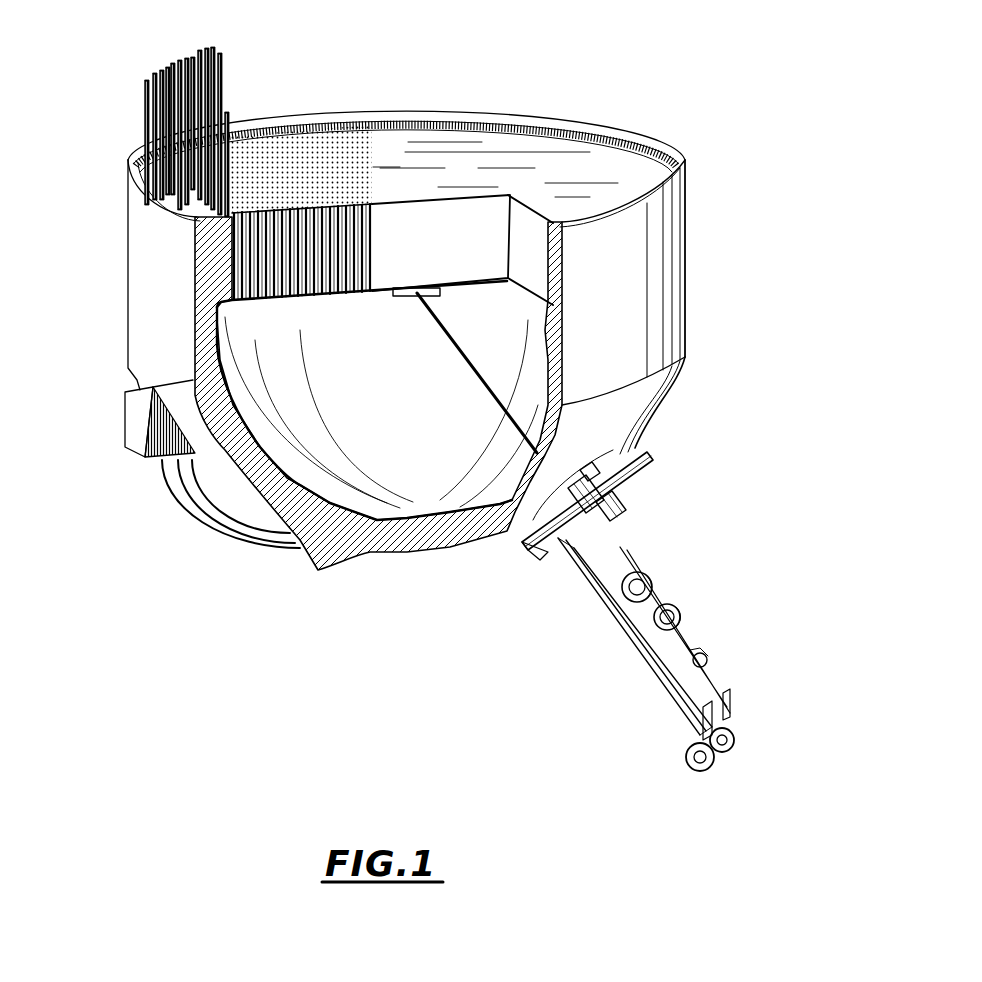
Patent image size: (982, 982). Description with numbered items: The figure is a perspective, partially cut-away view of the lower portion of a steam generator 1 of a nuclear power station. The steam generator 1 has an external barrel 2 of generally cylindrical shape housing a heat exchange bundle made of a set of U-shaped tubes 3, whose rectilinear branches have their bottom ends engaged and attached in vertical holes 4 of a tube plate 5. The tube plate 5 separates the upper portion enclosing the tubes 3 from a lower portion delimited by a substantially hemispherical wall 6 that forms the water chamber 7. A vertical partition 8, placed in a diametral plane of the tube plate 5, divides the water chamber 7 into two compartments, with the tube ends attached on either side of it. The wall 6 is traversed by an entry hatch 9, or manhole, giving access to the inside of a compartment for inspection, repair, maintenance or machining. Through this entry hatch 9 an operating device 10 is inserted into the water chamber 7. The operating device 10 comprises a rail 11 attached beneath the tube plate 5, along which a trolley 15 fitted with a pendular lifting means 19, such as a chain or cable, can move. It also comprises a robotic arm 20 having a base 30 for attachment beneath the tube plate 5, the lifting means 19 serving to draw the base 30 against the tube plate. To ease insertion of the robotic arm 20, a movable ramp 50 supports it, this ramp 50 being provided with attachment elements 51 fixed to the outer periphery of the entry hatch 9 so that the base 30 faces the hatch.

The steam generator 1 is at (494, 407).
The external barrel 2 is at (137, 262).
The tubes 3 is at (148, 79).
The vertical holes 4 is at (280, 210).
The tube plate 5 is at (433, 232).
The hemispherical wall 6 is at (217, 480).
The water chamber 7 is at (401, 490).
The vertical partition 8 is at (381, 412).
The entry hatch 9 is at (625, 491).
The operating device 10 is at (568, 538).
The rail 11 is at (288, 303).
The trolley 15 is at (435, 294).
The pendular lifting means 19 is at (470, 377).
The robotic arm 20 is at (680, 622).
The base 30 is at (633, 520).
The ramp 50 is at (597, 614).
The attachment elements 51 is at (517, 547).